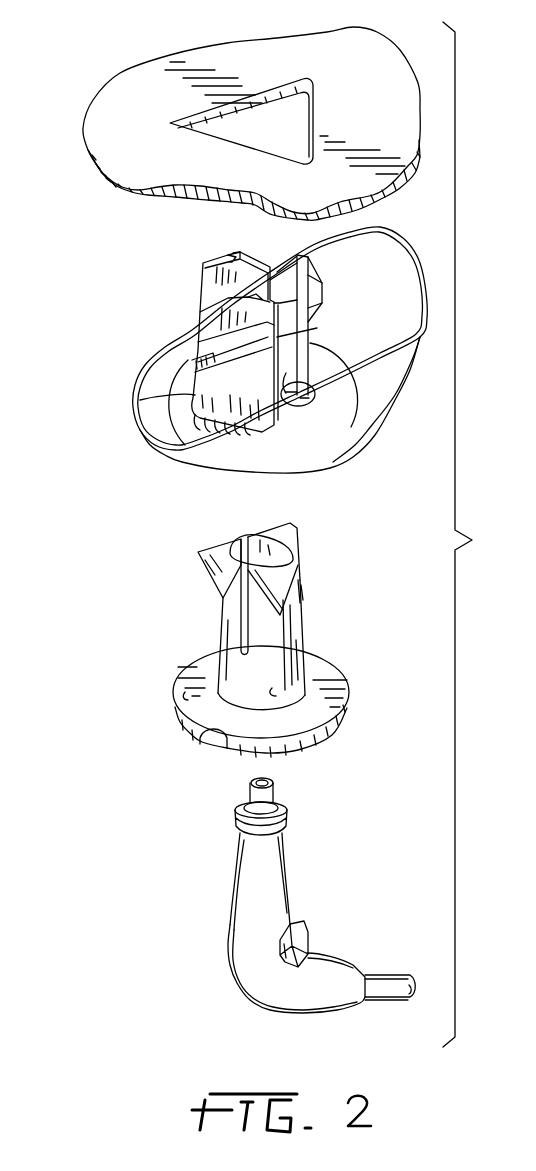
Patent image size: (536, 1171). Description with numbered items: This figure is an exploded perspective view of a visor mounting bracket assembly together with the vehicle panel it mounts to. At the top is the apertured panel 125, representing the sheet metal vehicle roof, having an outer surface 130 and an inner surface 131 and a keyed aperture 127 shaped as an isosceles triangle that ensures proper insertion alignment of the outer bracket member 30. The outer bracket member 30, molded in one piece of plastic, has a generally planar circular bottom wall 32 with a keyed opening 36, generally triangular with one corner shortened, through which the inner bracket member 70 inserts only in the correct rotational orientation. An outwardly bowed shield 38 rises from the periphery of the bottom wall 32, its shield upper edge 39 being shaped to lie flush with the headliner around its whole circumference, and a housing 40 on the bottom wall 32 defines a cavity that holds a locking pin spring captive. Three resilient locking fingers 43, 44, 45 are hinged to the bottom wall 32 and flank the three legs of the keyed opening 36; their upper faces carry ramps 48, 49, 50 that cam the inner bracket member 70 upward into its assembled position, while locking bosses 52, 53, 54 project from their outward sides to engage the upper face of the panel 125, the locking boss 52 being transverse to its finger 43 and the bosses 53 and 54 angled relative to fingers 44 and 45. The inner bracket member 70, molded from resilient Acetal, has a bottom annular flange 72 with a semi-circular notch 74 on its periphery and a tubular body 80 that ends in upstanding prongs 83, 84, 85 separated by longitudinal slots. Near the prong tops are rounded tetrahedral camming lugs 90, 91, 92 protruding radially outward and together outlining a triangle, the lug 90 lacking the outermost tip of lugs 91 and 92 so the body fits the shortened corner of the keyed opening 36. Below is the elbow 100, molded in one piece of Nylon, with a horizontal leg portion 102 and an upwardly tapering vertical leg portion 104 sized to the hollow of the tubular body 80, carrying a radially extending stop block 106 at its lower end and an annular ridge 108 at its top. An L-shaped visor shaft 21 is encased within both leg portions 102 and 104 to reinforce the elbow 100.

The visor shaft 21 is at (383, 988).
The outer bracket member 30 is at (113, 378).
The bottom wall 32 is at (173, 407).
The keyed opening 36 is at (300, 377).
The shield 38 is at (347, 428).
The shield upper edge 39 is at (393, 232).
The housing 40 is at (337, 398).
The locking finger 43 is at (313, 330).
The locking finger 44 is at (213, 280).
The locking finger 45 is at (233, 400).
The ramp 48 is at (307, 287).
The ramp 49 is at (247, 253).
The ramp 50 is at (220, 300).
The locking boss 52 is at (320, 303).
The locking boss 53 is at (193, 330).
The locking boss 54 is at (192, 357).
The inner bracket member 70 is at (348, 643).
The bottom annular flange 72 is at (190, 693).
The semi-circular notch 74 is at (215, 747).
The tubular body 80 is at (310, 682).
The prong 83 is at (280, 633).
The prong 84 is at (300, 603).
The prong 85 is at (225, 622).
The camming lug 90 is at (297, 590).
The camming lug 91 is at (278, 527).
The camming lug 92 is at (210, 577).
The elbow 100 is at (322, 890).
The horizontal leg portion 102 is at (327, 997).
The vertical leg portion 104 is at (255, 885).
The stop block 106 is at (308, 948).
The annular ridge 108 is at (283, 827).
The apertured panel 125 is at (355, 72).
The keyed aperture 127 is at (255, 113).
The outer surface 130 is at (150, 87).
The inner surface 131 is at (135, 207).